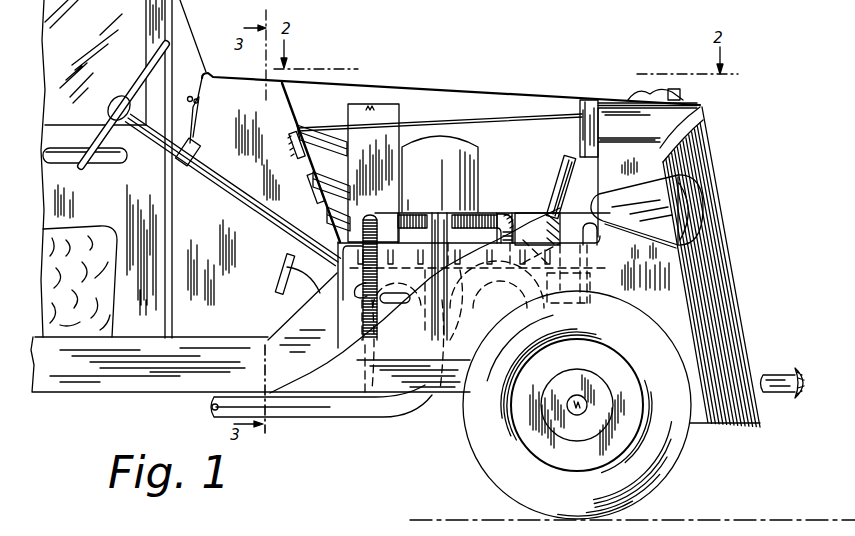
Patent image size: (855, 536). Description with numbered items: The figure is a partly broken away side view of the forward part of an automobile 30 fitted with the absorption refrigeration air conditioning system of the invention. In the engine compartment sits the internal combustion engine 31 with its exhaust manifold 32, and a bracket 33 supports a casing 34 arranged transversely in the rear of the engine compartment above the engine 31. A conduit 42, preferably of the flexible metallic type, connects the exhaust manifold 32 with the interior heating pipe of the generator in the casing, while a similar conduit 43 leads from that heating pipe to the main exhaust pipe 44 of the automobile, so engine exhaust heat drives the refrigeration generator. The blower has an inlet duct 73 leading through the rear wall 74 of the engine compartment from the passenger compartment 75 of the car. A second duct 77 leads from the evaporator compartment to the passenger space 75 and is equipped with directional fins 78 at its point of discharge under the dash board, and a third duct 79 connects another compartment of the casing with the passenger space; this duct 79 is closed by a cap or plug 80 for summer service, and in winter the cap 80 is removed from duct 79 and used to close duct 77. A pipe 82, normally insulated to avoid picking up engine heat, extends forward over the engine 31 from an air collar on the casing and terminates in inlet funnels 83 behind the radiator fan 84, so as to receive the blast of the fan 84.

The automobile 30 is at (83, 385).
The internal combustion engine 31 is at (334, 338).
The exhaust manifold 32 is at (390, 282).
The bracket 33 is at (305, 280).
The casing 34 is at (390, 113).
The conduit 42 is at (481, 220).
The conduit 43 is at (380, 298).
The main exhaust pipe 44 is at (292, 416).
The inlet duct 73 is at (338, 214).
The rear wall 74 is at (290, 104).
The passenger compartment 75 is at (188, 54).
The second duct 77 is at (332, 126).
The directional fins 78 is at (293, 140).
The third duct 79 is at (323, 180).
The cap or plug 80 is at (320, 190).
The pipe 82 is at (508, 216).
The inlet funnels 83 is at (548, 200).
The radiator fan 84 is at (597, 239).